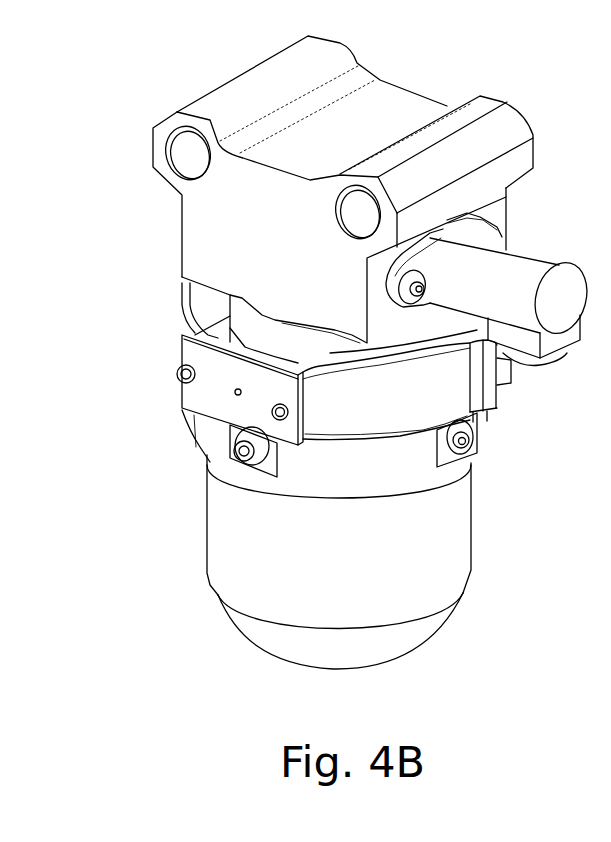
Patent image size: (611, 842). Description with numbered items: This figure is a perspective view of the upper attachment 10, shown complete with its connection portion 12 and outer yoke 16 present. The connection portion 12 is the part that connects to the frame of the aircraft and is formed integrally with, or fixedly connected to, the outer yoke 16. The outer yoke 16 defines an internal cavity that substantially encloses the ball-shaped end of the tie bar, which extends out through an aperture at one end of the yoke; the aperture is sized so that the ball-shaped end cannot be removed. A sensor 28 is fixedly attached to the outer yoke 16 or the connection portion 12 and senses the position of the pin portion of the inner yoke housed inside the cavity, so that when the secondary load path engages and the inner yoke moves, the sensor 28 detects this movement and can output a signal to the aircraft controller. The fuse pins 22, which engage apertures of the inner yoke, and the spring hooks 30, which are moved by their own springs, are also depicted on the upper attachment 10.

The upper attachment 10 is at (142, 52).
The connection portion 12 is at (510, 131).
The outer yoke 16 is at (452, 553).
The fuse pins 22 is at (473, 448).
The sensor 28 is at (523, 262).
The spring hooks 30 is at (213, 398).